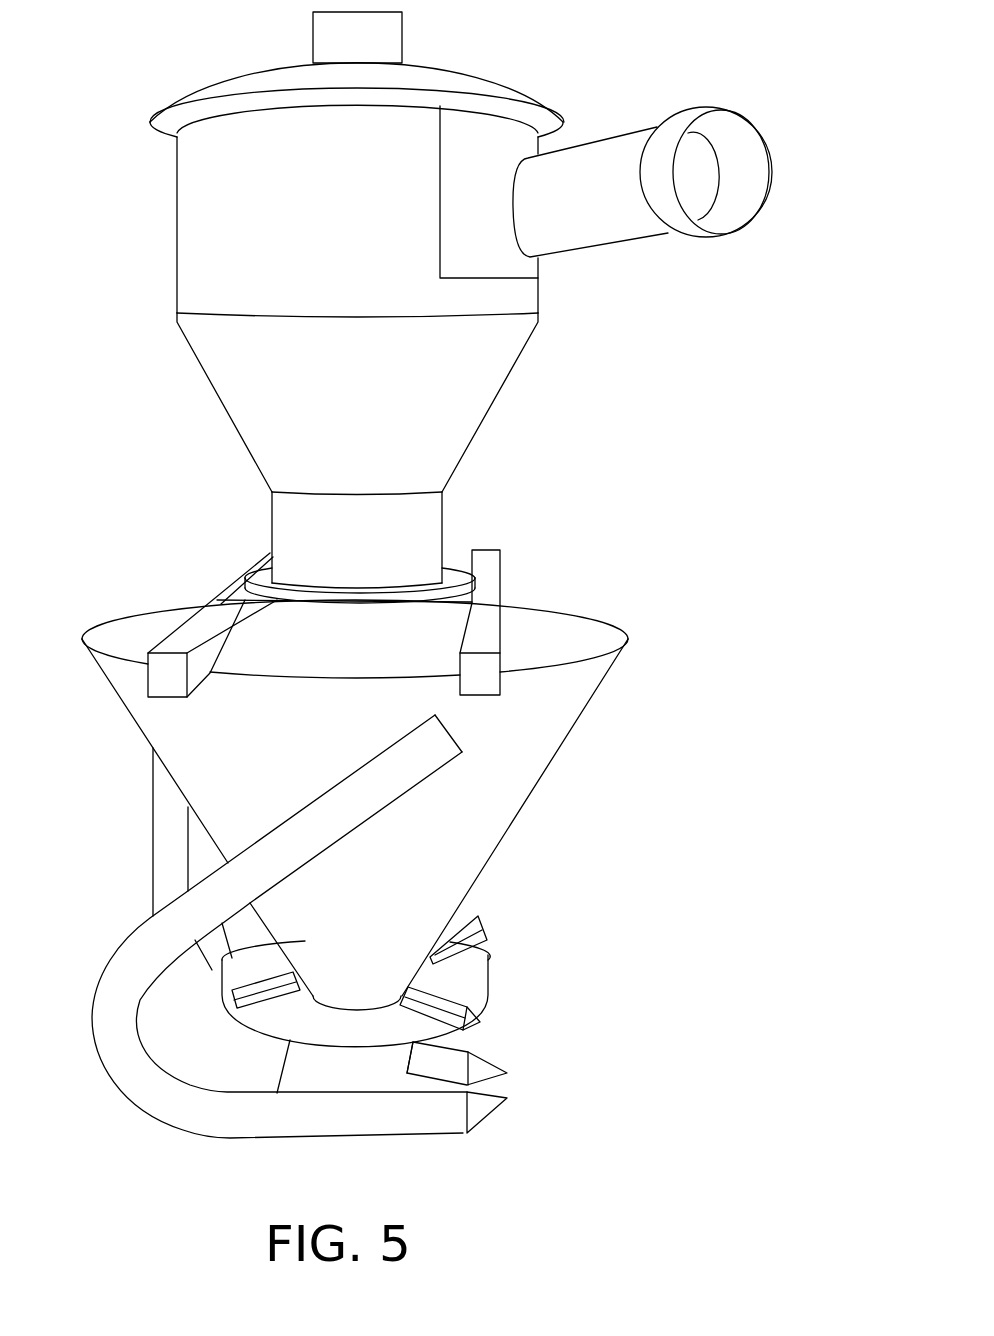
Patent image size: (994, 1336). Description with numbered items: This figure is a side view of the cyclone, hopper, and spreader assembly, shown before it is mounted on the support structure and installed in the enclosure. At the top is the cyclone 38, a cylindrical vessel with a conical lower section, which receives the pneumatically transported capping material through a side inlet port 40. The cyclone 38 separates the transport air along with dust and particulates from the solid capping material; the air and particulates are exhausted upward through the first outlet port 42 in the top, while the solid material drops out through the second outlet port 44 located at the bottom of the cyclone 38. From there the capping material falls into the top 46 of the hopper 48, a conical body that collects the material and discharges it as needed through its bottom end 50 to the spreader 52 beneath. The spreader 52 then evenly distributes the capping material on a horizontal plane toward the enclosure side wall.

The cyclone 38 is at (188, 350).
The inlet port 40 is at (763, 207).
The first outlet port 42 is at (402, 33).
The second outlet port 44 is at (393, 607).
The top of the hopper 46 is at (302, 658).
The hopper 48 is at (523, 755).
The bottom end of the hopper 50 is at (387, 992).
The spreader 52 is at (408, 1033).